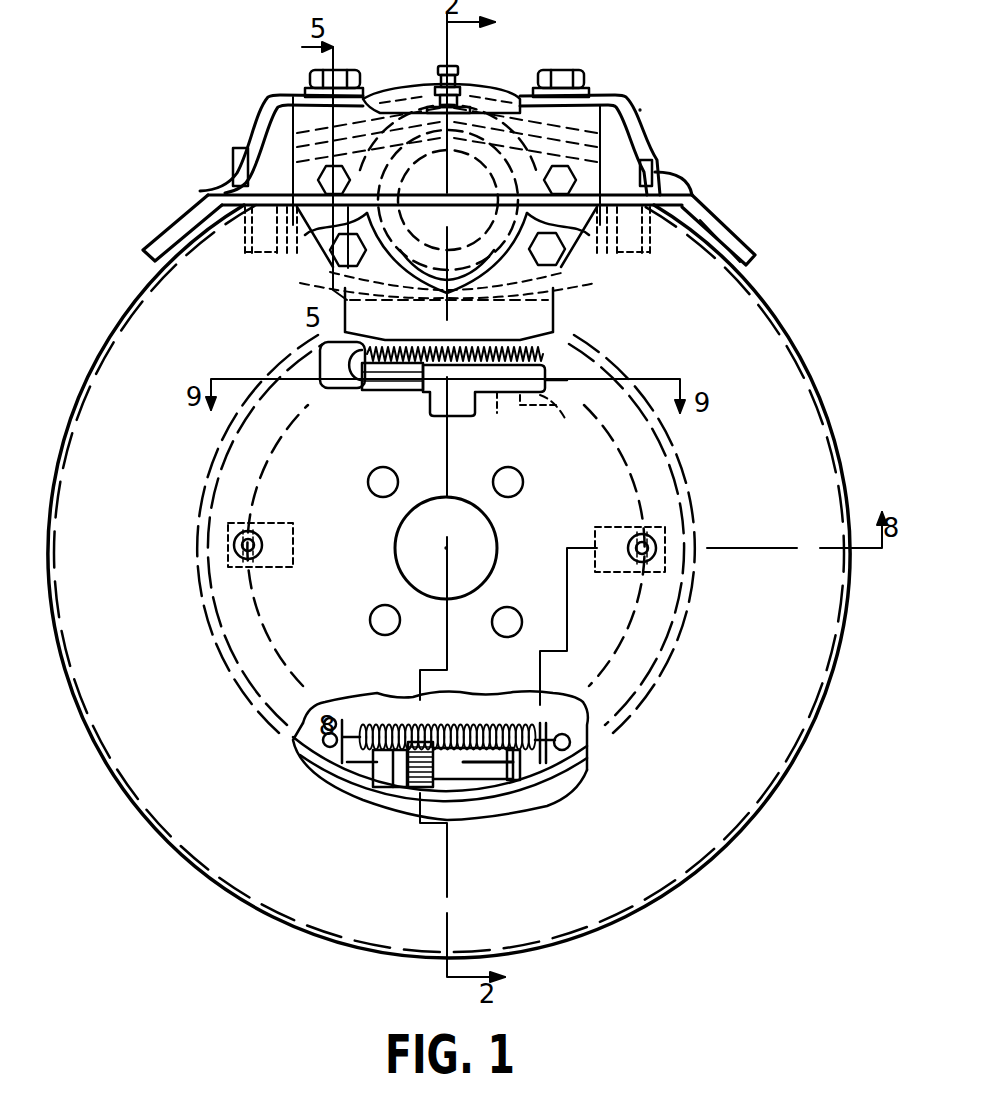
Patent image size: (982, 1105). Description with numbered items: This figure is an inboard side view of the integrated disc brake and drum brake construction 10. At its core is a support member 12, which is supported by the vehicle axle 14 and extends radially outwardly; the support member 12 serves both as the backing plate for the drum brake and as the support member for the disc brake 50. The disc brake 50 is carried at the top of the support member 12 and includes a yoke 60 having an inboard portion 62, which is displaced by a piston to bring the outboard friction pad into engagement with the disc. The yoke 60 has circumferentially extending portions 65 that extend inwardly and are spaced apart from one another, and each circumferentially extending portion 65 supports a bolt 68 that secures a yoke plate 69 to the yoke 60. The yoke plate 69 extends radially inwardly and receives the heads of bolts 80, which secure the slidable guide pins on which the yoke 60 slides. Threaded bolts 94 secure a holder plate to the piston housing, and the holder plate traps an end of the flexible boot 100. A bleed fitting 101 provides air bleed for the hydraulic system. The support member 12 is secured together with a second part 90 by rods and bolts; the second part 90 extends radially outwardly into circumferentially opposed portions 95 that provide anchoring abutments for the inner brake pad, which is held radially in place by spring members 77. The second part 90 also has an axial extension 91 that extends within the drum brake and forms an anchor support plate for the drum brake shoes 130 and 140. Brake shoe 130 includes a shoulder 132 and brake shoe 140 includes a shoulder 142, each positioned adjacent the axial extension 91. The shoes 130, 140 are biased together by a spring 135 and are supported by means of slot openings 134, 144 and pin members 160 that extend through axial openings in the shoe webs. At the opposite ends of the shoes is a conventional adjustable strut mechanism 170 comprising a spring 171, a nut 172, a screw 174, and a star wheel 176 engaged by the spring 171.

The integrated disc brake and drum brake construction 10 is at (777, 123).
The support member 12 is at (781, 467).
The vehicle axle 14 is at (408, 571).
The disc brake 50 is at (690, 90).
The yoke 60 is at (163, 226).
The inboard portion 62 is at (690, 196).
The circumferentially extending portions 65 is at (613, 98).
The bolt 68 is at (356, 80).
The yoke plate 69 is at (297, 117).
The spring members 77 is at (708, 249).
The bolt 80 is at (320, 182).
The second part 90 is at (548, 298).
The axial extension 91 is at (449, 314).
The threaded bolts 94 is at (343, 254).
The circumferentially opposed portions 95 is at (246, 250).
The flexible boot 100 is at (648, 535).
The bleed fitting 101 is at (458, 80).
The drum brake shoe 130 is at (230, 483).
The shoulder 132 is at (305, 328).
The slot opening 134 is at (340, 395).
The spring 135 is at (495, 405).
The drum brake shoe 140 is at (665, 487).
The shoulder 142 is at (583, 328).
The slot opening 144 is at (573, 430).
The pin members 160 is at (240, 533).
The adjustable strut mechanism 170 is at (537, 817).
The spring 171 is at (438, 712).
The nut 172 is at (472, 770).
The screw 174 is at (385, 780).
The star wheel 176 is at (418, 793).